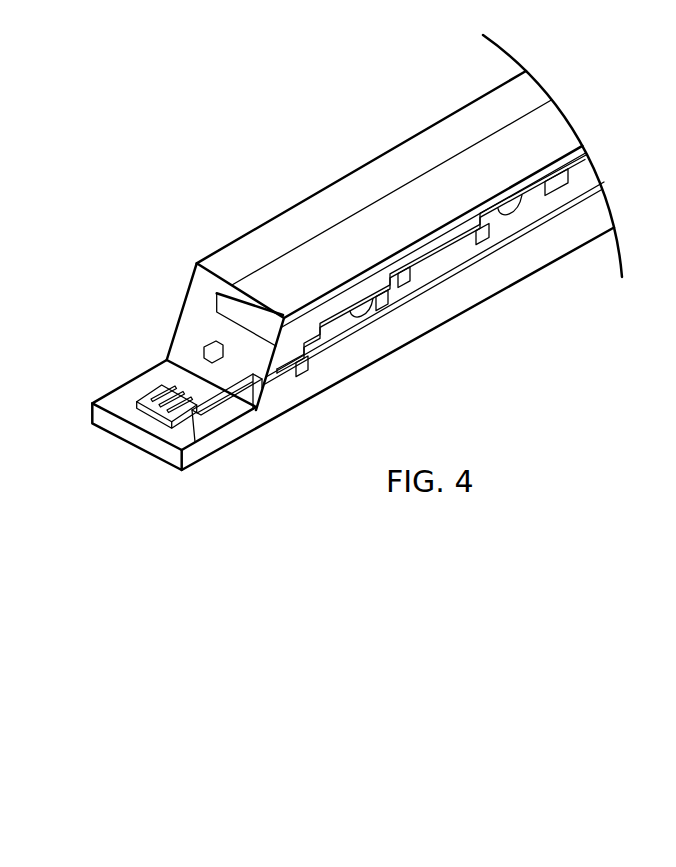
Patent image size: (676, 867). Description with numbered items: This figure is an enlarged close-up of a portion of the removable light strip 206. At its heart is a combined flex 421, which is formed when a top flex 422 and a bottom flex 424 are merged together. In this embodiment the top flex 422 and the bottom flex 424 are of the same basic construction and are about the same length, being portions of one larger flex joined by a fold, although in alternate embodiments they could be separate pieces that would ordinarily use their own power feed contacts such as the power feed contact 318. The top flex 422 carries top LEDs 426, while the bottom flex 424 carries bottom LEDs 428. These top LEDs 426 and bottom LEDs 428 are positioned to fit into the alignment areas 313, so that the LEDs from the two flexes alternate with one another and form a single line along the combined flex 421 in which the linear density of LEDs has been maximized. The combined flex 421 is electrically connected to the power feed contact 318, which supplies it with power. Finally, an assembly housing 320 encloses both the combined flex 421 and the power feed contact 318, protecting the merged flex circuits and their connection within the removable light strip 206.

The removable light strip 206 is at (222, 120).
The assembly housing 320 is at (253, 230).
The top flex 422 is at (500, 88).
The top LEDs 426 is at (435, 255).
The bottom flex 424 is at (540, 233).
The bottom LEDs 428 is at (515, 233).
The alignment areas 313 is at (353, 292).
The combined flex 421 is at (222, 343).
The power feed contact 318 is at (195, 417).